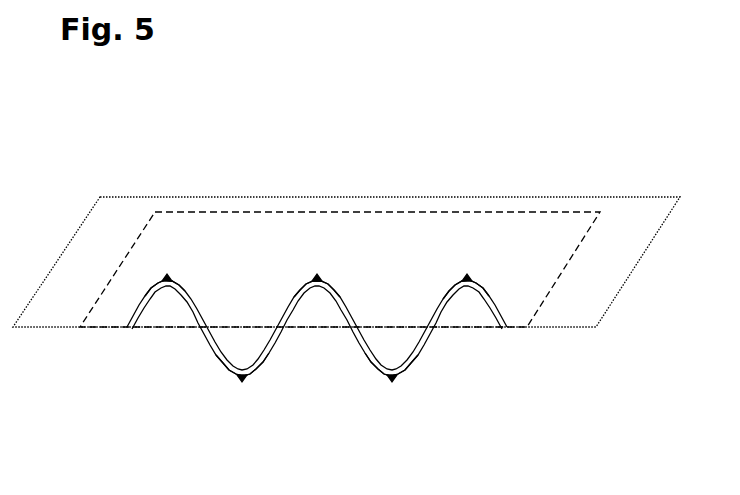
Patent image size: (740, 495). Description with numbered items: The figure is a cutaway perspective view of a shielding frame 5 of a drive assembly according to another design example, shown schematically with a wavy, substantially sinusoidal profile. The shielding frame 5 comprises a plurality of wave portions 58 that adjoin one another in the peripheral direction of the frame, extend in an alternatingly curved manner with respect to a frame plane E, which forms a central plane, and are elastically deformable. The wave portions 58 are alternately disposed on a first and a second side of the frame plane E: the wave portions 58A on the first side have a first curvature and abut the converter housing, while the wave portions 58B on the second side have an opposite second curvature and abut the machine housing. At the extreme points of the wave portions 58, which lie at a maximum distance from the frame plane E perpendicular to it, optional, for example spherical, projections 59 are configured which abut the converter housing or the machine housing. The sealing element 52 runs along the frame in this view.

The shielding frame 5 is at (112, 165).
The frame plane E is at (56, 258).
The sealing element 52 is at (345, 318).
The wave portions 58 is at (355, 325).
The wave portions located on the first side of the frame plane 58A is at (193, 302).
The wave portions located on the second side of the frame plane 58B is at (205, 343).
The projections 59 is at (167, 277).